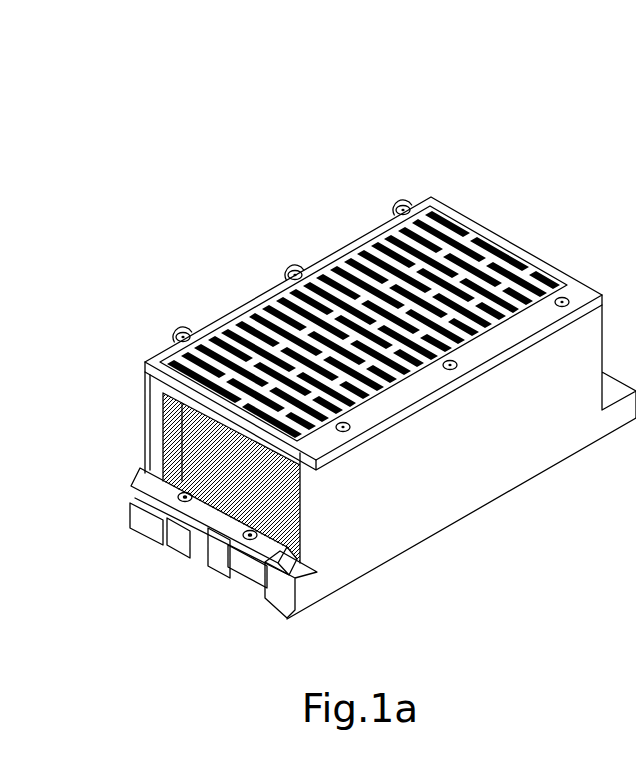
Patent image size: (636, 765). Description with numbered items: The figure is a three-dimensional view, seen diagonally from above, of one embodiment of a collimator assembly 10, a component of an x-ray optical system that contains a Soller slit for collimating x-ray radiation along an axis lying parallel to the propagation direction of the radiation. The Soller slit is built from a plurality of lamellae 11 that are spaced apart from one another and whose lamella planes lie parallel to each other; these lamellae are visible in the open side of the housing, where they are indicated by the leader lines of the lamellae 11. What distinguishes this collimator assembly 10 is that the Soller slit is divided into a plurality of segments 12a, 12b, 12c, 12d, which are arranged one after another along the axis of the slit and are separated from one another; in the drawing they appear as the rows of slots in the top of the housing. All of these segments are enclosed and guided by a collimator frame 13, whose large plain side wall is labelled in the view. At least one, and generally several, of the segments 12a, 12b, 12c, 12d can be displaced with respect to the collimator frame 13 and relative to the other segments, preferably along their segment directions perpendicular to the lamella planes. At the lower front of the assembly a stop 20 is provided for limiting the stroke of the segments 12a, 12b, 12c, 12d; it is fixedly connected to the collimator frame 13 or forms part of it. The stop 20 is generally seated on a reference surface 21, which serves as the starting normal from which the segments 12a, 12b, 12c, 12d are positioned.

The collimator assembly 10 is at (224, 170).
The lamellae 11 is at (163, 457).
The segment 12a is at (181, 338).
The segment 12b is at (215, 352).
The segment 12c is at (282, 420).
The segment 12d is at (276, 390).
The collimator frame 13 is at (387, 472).
The stop 20 is at (222, 522).
The reference surface 21 is at (338, 647).